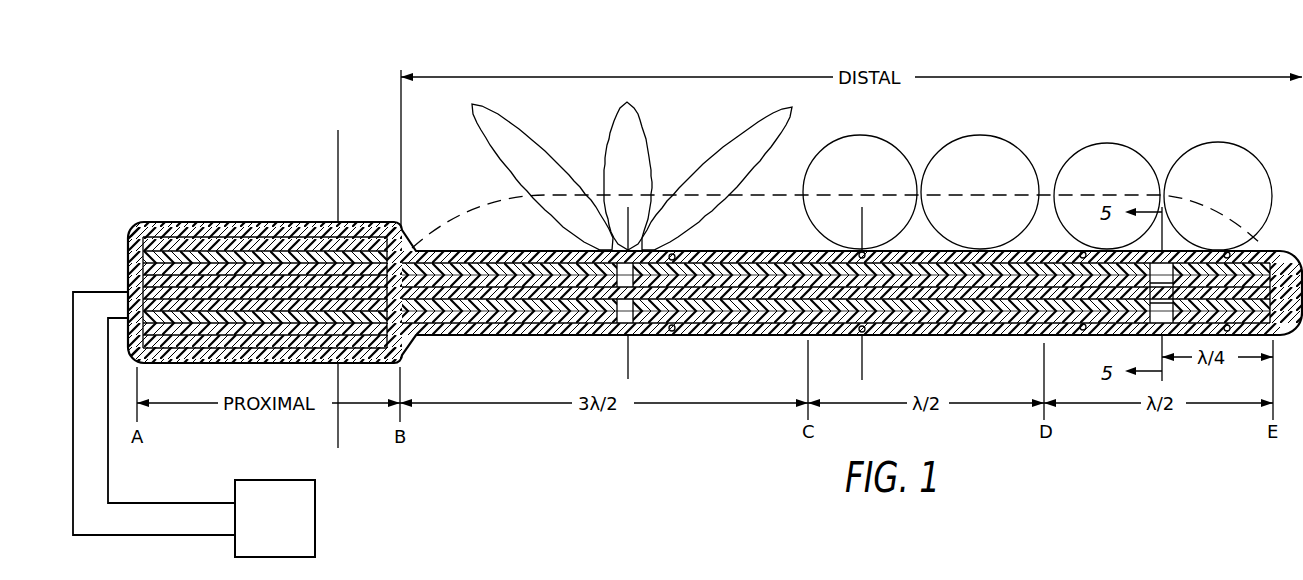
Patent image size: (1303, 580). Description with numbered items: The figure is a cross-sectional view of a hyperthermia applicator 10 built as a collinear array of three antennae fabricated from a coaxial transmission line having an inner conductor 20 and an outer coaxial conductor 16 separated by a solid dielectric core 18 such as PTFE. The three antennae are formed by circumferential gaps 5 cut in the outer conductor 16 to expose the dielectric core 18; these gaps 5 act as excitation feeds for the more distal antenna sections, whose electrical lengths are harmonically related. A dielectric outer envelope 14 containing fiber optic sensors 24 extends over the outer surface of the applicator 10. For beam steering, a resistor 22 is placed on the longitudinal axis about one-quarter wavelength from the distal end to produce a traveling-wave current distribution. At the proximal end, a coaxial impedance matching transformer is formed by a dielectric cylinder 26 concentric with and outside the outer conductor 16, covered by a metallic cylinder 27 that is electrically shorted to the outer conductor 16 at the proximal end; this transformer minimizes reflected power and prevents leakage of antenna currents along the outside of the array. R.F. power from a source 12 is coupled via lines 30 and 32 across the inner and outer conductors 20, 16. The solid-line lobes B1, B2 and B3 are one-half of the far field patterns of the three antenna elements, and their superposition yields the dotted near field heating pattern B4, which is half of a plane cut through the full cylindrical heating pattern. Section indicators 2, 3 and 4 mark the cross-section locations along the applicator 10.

The applicator 10 is at (676, 459).
The source 12 is at (275, 518).
The dielectric outer envelope 14 is at (511, 337).
The outer coaxial conductor 16 is at (760, 337).
The dielectric core 18 is at (1057, 312).
The inner conductor 20 is at (998, 312).
The resistor 22 is at (1132, 333).
The fiber optic sensors 24 is at (671, 337).
The dielectric cylinder 26 is at (190, 255).
The metallic cylinder 27 is at (262, 232).
The line 30 is at (203, 503).
The line 32 is at (188, 535).
The circumferential gaps 5 is at (930, 337).
The section line 2- 2 is at (338, 137).
The section line 3- 3 is at (628, 212).
The section line 4- 4 is at (862, 212).
The far field antenna pattern B1 is at (722, 140).
The far field antenna pattern B2 is at (965, 135).
The far field antenna pattern B3 is at (1237, 145).
The near field heating pattern B4 is at (1068, 196).